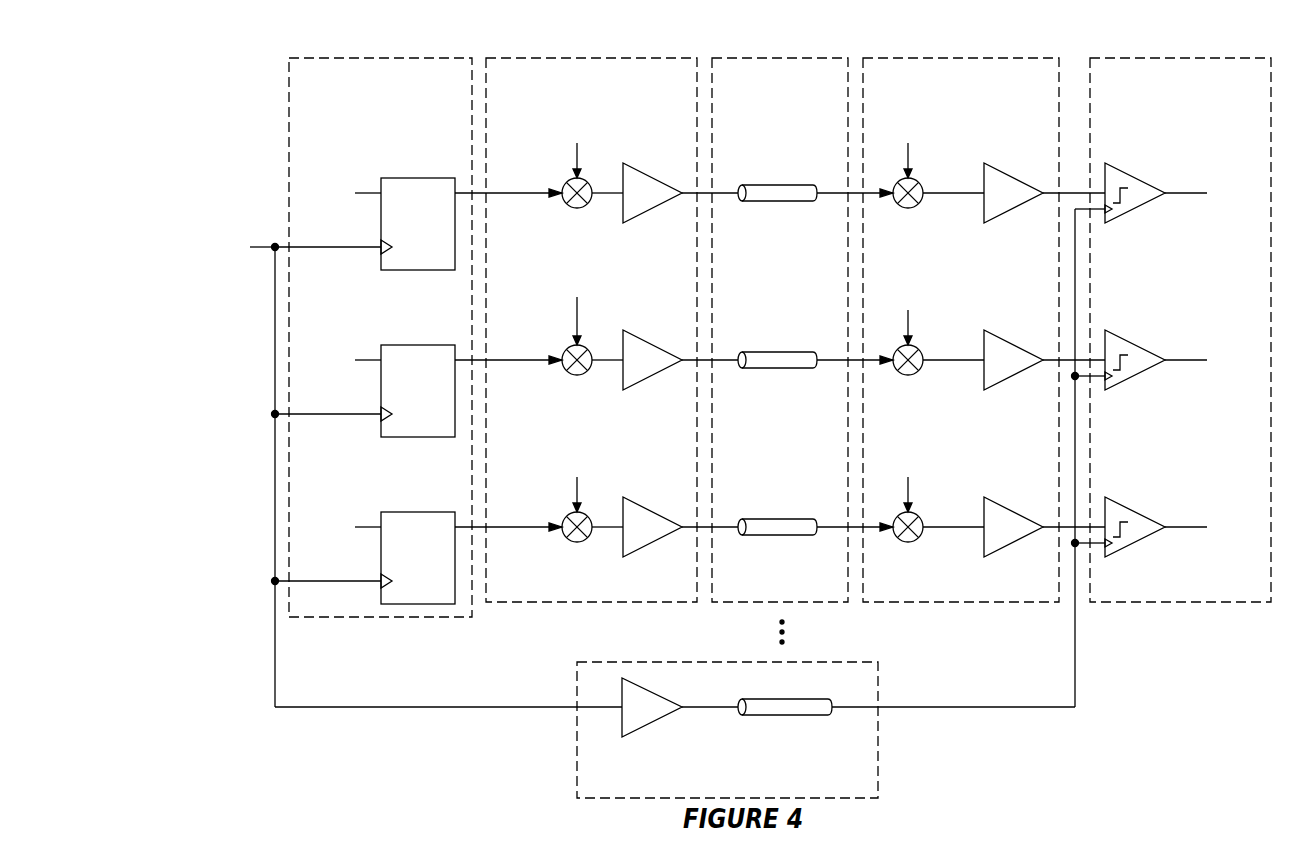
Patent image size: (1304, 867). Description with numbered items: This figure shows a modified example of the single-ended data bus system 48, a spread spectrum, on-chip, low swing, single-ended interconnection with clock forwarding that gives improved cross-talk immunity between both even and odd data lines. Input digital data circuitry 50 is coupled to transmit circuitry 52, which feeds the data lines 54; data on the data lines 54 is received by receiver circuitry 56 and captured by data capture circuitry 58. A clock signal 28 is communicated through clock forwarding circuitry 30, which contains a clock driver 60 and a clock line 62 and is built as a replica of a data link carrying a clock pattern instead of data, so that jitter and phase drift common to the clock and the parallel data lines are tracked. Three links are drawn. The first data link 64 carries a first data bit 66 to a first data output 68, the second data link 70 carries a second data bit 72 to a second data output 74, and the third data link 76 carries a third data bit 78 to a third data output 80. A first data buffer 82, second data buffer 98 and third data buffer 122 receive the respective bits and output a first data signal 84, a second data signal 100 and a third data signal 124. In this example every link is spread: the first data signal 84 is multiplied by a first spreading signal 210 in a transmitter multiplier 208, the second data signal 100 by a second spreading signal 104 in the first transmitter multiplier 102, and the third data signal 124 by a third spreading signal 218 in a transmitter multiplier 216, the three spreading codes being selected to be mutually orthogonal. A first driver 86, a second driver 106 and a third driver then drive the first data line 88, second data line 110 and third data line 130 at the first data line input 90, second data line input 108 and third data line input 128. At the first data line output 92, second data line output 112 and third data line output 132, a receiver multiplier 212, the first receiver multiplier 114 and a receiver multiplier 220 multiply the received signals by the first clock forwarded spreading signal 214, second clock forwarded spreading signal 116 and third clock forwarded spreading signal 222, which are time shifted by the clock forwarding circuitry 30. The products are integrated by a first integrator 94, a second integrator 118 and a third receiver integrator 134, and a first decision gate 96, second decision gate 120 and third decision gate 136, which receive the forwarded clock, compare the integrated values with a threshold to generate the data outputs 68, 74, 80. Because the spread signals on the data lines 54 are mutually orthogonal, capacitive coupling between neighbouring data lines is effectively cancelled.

The single-ended data bus system 48 is at (246, 67).
The input digital data circuitry 50 is at (371, 128).
The transmit circuitry 52 is at (582, 108).
The data lines 54 is at (771, 108).
The receiver circuitry 56 is at (954, 108).
The data capture circuitry 58 is at (1171, 126).
The clock forwarding circuitry 30 is at (617, 788).
The clock signal 28 is at (462, 707).
The clock driver 60 is at (646, 690).
The clock line 62 is at (805, 699).
The first data link 64 is at (256, 196).
The second data link 70 is at (265, 355).
The third data link 76 is at (265, 537).
The first data bit 66 is at (365, 197).
The second data bit 72 is at (353, 379).
The third data bit 78 is at (353, 546).
The first data buffer 82 is at (410, 178).
The second data buffer 98 is at (408, 376).
The third data buffer 122 is at (405, 543).
The first data signal 84 is at (540, 197).
The second data signal 100 is at (508, 365).
The third data signal 124 is at (508, 532).
The modulation signal S1(t) input 210 is at (578, 152).
The spreading code 104 is at (594, 313).
The modulation signal S3(t) input 218 is at (604, 480).
The transmitter mixer 208 is at (583, 208).
The first transmitter multiplier 102 is at (598, 380).
The transmitter mixer 216 is at (596, 547).
The first driver 86 is at (648, 176).
The second driver 106 is at (660, 355).
The first data line 88 is at (790, 185).
The second data line 110 is at (793, 344).
The third data line 130 is at (793, 511).
The first data line input 90 is at (741, 201).
The second data line input 108 is at (715, 391).
The third data line input 128 is at (715, 558).
The first data line output 92 is at (818, 201).
The second data line output 112 is at (855, 385).
The third data line output 132 is at (855, 552).
The first clock forwarded spreading signal 214 is at (908, 152).
The second clock forwarded spreading signal 116 is at (930, 313).
The third clock forwarded spreading signal 222 is at (933, 480).
The receiver mixer 212 is at (914, 208).
The first receiver multiplier 114 is at (928, 380).
The receiver mixer 220 is at (927, 547).
The first integrator 94 is at (1009, 176).
The second integrator 118 is at (1017, 355).
The third receiver integrator 134 is at (1017, 522).
The first decision gate 96 is at (1130, 175).
The second decision gate 120 is at (1143, 350).
The third decision gate 136 is at (1143, 517).
The first data output 68 is at (1178, 192).
The second data output 74 is at (1214, 347).
The third data output 80 is at (1214, 514).